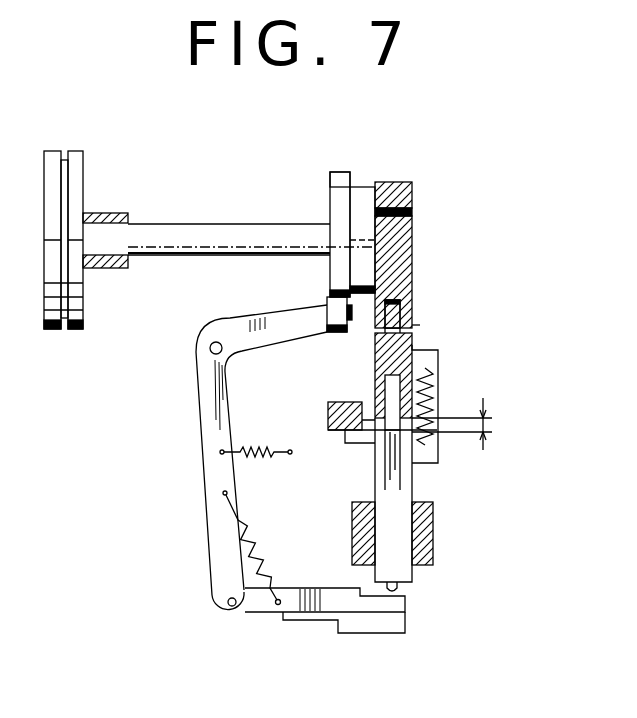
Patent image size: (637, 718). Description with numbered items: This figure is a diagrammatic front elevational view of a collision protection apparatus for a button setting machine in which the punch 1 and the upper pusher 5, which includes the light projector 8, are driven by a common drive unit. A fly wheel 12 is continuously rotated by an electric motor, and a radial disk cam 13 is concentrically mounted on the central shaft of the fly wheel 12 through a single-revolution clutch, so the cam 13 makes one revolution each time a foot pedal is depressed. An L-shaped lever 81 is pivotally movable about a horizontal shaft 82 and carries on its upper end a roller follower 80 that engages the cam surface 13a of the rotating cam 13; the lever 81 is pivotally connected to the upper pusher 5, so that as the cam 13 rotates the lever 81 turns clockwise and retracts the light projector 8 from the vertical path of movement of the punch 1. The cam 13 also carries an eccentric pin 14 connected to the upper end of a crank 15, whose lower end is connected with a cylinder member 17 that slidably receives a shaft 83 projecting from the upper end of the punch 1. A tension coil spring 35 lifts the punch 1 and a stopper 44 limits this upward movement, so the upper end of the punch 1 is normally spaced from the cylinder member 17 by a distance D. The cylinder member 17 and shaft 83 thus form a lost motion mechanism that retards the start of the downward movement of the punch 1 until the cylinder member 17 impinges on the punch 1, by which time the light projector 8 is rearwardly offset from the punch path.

The punch 1 is at (405, 533).
The upper pusher 5 is at (292, 588).
The light projector 8 is at (372, 627).
The fly wheel 12 is at (78, 191).
The radial disk cam 13 is at (338, 203).
The cam surface 13a is at (343, 172).
The eccentric pin 14 is at (392, 205).
The crank 15 is at (402, 243).
The cylinder member 17 is at (412, 340).
The tension coil spring 35 is at (432, 377).
The stopper 44 is at (328, 415).
The roller follower 80 is at (333, 333).
The L-shaped lever 81 is at (210, 480).
The horizontal shaft 82 is at (210, 350).
The shaft 83 is at (390, 400).
The distance D is at (461, 424).